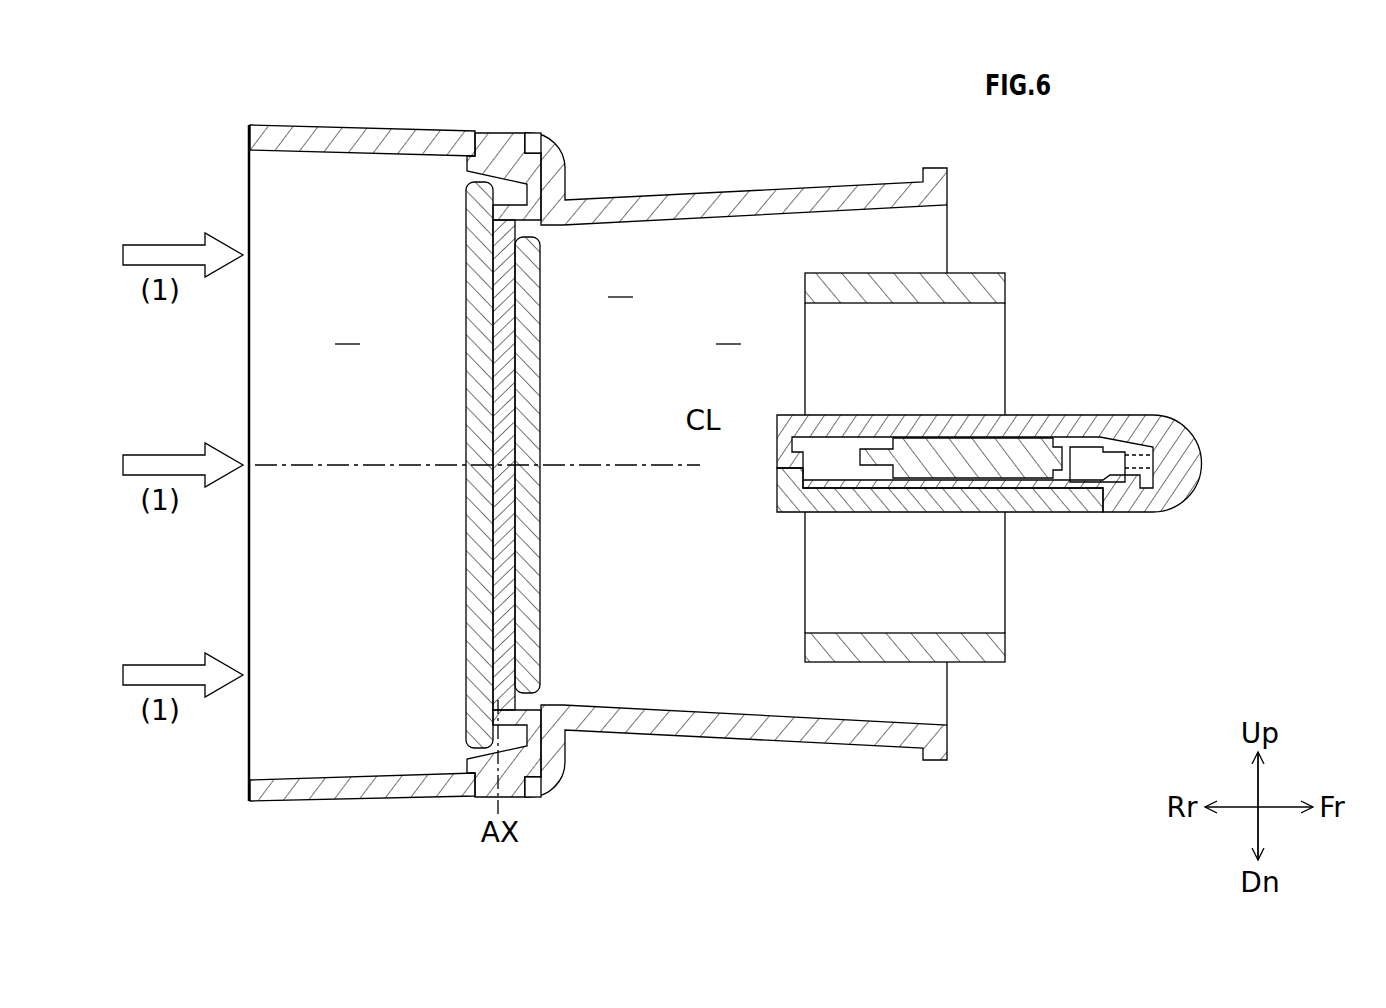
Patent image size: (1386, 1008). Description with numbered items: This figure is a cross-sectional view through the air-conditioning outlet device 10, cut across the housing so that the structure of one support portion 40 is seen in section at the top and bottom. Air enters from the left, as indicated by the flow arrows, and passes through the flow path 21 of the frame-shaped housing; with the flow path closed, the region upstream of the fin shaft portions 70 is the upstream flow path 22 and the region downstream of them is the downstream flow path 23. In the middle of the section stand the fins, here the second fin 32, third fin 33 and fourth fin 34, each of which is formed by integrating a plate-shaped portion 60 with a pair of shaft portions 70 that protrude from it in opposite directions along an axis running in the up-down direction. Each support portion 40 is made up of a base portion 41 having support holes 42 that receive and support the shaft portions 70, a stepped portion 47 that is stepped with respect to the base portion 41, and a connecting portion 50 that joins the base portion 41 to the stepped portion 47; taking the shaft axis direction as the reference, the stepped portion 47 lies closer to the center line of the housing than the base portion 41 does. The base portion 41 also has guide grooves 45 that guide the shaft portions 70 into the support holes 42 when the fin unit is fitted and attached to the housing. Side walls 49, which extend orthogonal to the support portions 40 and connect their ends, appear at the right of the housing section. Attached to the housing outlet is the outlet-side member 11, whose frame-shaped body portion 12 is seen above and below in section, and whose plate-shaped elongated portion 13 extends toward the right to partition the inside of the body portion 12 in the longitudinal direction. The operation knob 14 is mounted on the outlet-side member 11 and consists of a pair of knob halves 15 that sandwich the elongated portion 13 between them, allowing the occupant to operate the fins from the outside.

The air-conditioning outlet device 10 is at (1205, 150).
The outlet-side member 11 is at (1037, 430).
The body portion 12 is at (962, 292).
The elongated portion 13 is at (920, 437).
The operation knob 14 is at (1210, 462).
The knob halves 15 is at (1065, 418).
The flow path 21 is at (620, 283).
The upstream flow path 22 is at (347, 330).
The downstream flow path 23 is at (728, 330).
The second fin 32 is at (478, 398).
The third fin 33 is at (503, 396).
The fourth fin 34 is at (528, 400).
The support portion 40 is at (336, 50).
The base portion 41 is at (362, 462).
The support holes 42 is at (487, 133).
The guide grooves 45 is at (410, 162).
The stepped portion 47 is at (778, 198).
The side walls 49 is at (830, 240).
The connecting portion 50 is at (736, 462).
The plate-shaped portion 60 is at (505, 465).
The shaft portions 70 is at (500, 136).